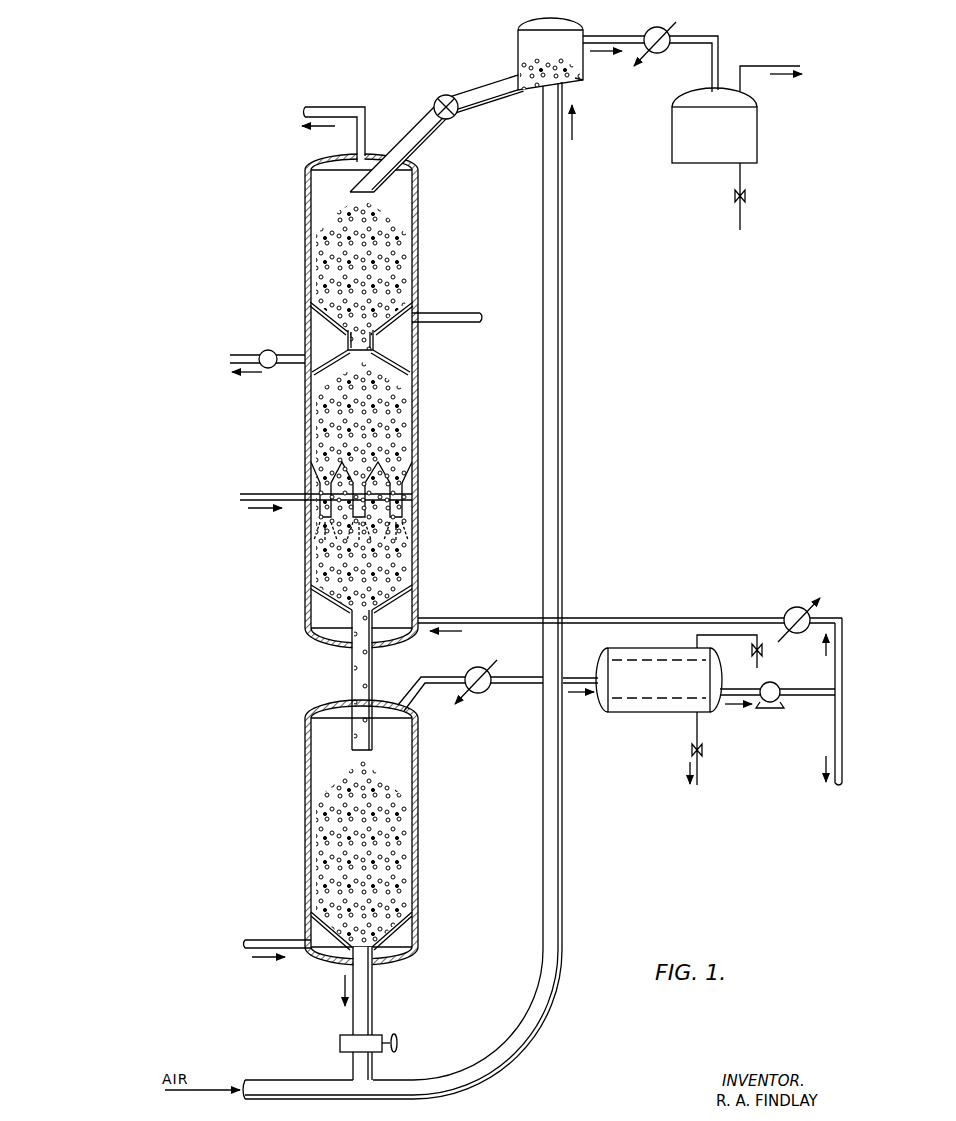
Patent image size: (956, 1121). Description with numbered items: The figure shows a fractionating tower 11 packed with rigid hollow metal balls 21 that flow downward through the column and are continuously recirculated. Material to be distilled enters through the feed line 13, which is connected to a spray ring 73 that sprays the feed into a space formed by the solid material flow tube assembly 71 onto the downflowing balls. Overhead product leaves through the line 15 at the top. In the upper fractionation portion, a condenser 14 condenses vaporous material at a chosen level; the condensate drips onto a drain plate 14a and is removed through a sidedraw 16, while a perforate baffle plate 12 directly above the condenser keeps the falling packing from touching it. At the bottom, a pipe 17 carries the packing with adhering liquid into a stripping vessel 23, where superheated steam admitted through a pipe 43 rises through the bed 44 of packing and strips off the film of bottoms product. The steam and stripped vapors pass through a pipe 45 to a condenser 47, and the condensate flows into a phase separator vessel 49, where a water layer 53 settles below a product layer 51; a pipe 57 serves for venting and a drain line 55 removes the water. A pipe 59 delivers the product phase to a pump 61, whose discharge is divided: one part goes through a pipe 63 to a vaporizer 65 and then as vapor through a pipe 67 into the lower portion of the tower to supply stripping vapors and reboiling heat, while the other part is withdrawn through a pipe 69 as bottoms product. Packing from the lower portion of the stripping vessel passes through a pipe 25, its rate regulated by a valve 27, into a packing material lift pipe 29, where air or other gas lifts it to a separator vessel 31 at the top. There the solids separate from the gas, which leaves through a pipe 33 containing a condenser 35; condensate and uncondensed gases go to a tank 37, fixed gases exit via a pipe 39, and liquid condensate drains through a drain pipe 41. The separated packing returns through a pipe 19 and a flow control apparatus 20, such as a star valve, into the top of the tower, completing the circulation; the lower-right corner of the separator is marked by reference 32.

The fractionating tower 11 is at (418, 417).
The perforate baffle plate 12 is at (414, 316).
The feed line 13 is at (266, 490).
The condenser 14 is at (418, 334).
The drain plate 14a is at (320, 358).
The line 15 is at (326, 110).
The sidedraw 16 is at (248, 353).
The pipe 17 is at (351, 671).
The pipe 19 is at (485, 115).
The flow control apparatus 20 is at (446, 95).
The rigid hollow metal balls 21 is at (316, 257).
The stripping vessel 23 is at (418, 744).
The pipe 25 is at (373, 1002).
The valve 27 is at (340, 1038).
The packing material lift pipe 29 is at (566, 288).
The separator vessel 31 is at (518, 43).
The hopper outlet corner 32 is at (582, 80).
The pipe 33 is at (604, 40).
The condenser 35 is at (669, 54).
The tank 37 is at (724, 144).
The pipe 39 is at (758, 70).
The drain pipe 41 is at (740, 216).
The pipe 43 is at (270, 938).
The bed of packing material 44 is at (314, 816).
The pipe 45 is at (441, 676).
The condenser 47 is at (488, 692).
The phase separator vessel 49 is at (596, 686).
The product layer 51 is at (665, 688).
The water layer 53 is at (638, 708).
The drain line 55 is at (704, 768).
The pipe 57 is at (760, 664).
The pipe 59 is at (752, 691).
The pump 61 is at (766, 708).
The pipe 63 is at (824, 618).
The vaporizer 65 is at (795, 608).
The pipe 67 is at (484, 618).
The pipe 69 is at (838, 784).
The solid material flow tube assembly 71 is at (416, 480).
The spray ring 73 is at (400, 522).